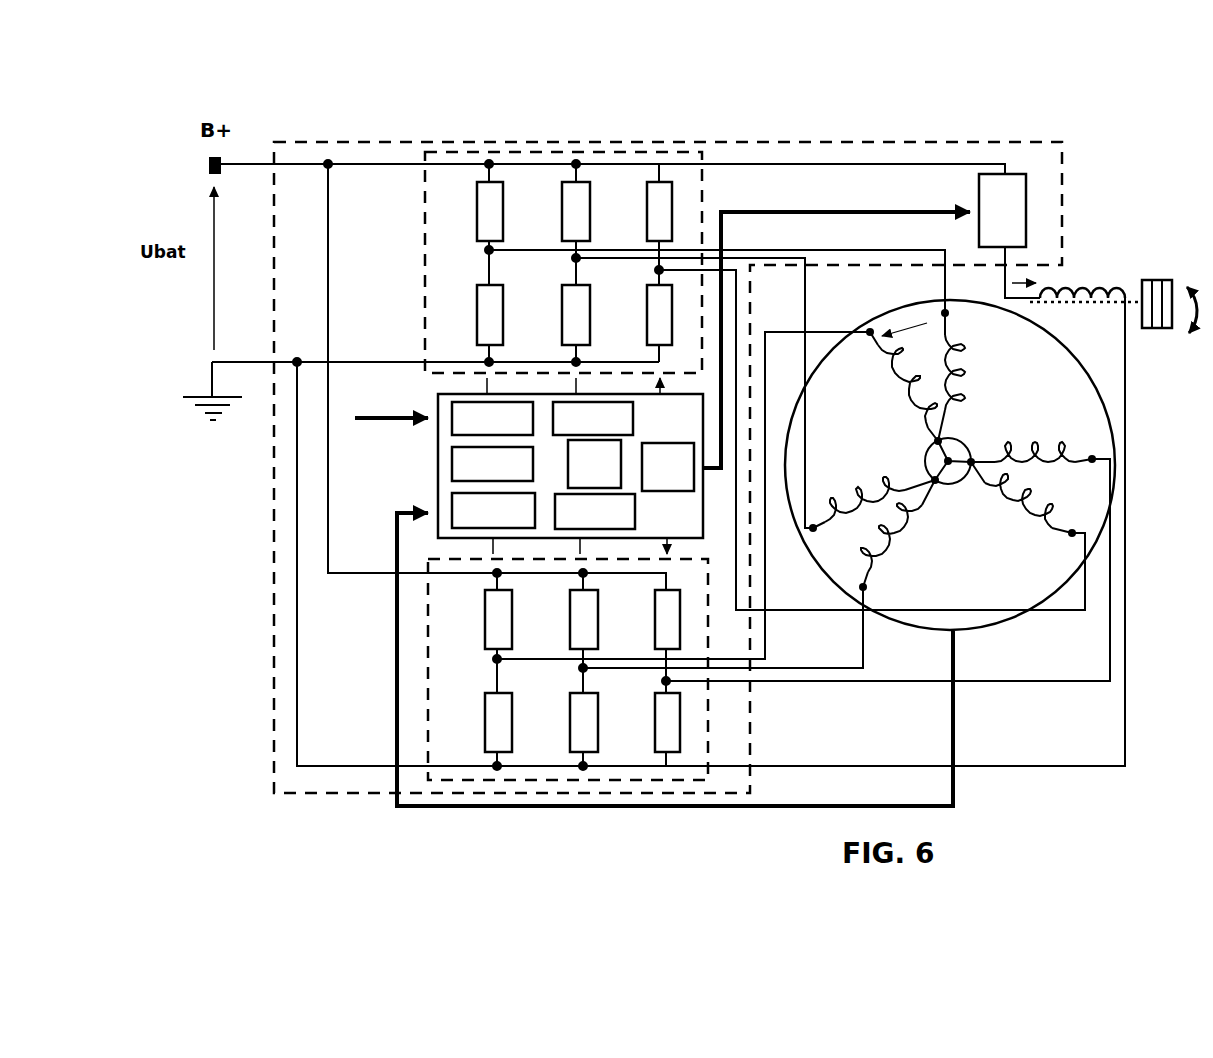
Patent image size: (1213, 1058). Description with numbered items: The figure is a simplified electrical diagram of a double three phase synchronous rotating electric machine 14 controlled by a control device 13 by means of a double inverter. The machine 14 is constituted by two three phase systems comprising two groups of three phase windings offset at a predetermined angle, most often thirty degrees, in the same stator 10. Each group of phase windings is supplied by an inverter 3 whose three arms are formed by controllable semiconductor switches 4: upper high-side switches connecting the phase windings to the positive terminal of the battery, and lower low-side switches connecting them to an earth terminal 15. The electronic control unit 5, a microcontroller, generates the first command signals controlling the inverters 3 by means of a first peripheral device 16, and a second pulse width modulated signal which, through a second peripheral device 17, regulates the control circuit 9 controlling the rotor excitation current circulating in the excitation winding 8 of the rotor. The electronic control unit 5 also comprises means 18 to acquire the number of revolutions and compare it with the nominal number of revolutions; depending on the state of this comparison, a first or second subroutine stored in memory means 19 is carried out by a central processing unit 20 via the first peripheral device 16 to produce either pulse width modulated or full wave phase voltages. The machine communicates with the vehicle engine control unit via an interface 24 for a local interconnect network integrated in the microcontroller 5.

The inverter 3 is at (746, 466).
The controllable semiconductor switches 4 is at (482, 222).
The electronic control unit 5 is at (654, 492).
The excitation winding 8 is at (1106, 288).
The control circuit 9 is at (1010, 228).
The stator 10 is at (1004, 620).
The control device 13 is at (268, 551).
The double three phase rotating electric machine 14 is at (1128, 141).
The earth terminal 15 is at (212, 378).
The first peripheral device 16 is at (613, 420).
The second peripheral device 17 is at (678, 482).
The means to acquire the number of revolutions 18 is at (478, 520).
The memory means 19 is at (465, 470).
The central processing unit 20 is at (575, 472).
The interface 24 is at (470, 420).